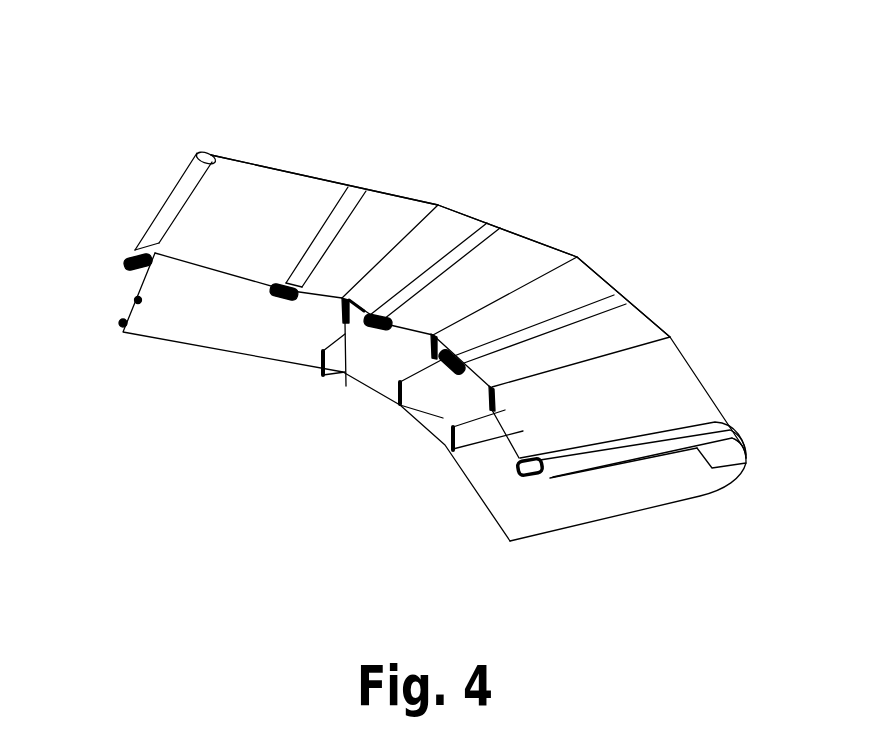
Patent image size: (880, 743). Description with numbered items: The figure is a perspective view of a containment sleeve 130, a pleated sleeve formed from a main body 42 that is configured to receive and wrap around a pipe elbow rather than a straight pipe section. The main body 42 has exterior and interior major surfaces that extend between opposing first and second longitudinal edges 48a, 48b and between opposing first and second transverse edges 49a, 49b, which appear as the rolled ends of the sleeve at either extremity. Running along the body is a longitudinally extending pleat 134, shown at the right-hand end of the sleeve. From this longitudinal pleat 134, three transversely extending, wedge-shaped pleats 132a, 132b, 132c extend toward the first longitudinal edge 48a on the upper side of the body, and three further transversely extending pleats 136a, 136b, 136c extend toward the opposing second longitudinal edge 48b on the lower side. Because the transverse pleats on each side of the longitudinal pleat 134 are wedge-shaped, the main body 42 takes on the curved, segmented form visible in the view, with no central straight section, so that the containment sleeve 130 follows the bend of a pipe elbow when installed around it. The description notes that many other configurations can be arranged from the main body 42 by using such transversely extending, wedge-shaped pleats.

The containment sleeve 130 is at (591, 45).
The main body 42 is at (257, 165).
The first transverse edge 49a is at (165, 202).
The second transverse edge 49b is at (632, 513).
The transversely extending pleat 132a is at (438, 204).
The transversely extending pleat 132b is at (577, 256).
The transversely extending pleat 132c is at (672, 338).
The first longitudinal edge 48a is at (233, 277).
The second longitudinal edge 48b is at (497, 522).
The transversely extending pleat 136a is at (342, 352).
The transversely extending pleat 136b is at (420, 387).
The transversely extending pleat 136c is at (477, 437).
The longitudinally extending pleat 134 is at (741, 478).